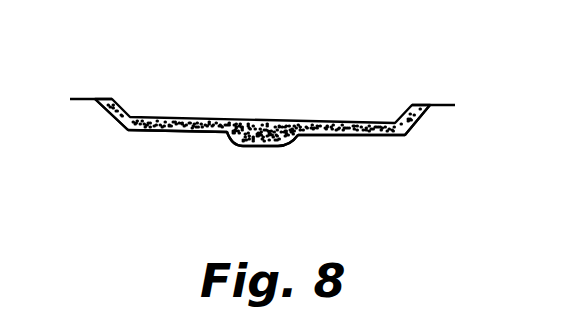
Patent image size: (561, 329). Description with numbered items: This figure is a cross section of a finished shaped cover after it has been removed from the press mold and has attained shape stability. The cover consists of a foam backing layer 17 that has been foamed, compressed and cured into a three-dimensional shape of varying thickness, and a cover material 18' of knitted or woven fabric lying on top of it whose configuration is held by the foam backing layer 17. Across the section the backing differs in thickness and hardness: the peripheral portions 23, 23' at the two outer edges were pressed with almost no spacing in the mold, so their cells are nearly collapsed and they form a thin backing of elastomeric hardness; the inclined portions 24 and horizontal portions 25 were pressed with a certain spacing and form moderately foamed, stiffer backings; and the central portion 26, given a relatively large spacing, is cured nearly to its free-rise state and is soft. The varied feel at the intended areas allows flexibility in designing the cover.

The cover material 18' is at (262, 94).
The peripheral portion 23 is at (97, 70).
The flange 23' is at (440, 74).
The inclined portion 24 is at (108, 115).
The horizontal portion 25 is at (155, 132).
The foam backing layer 17 is at (237, 138).
The central portion 26 is at (275, 147).